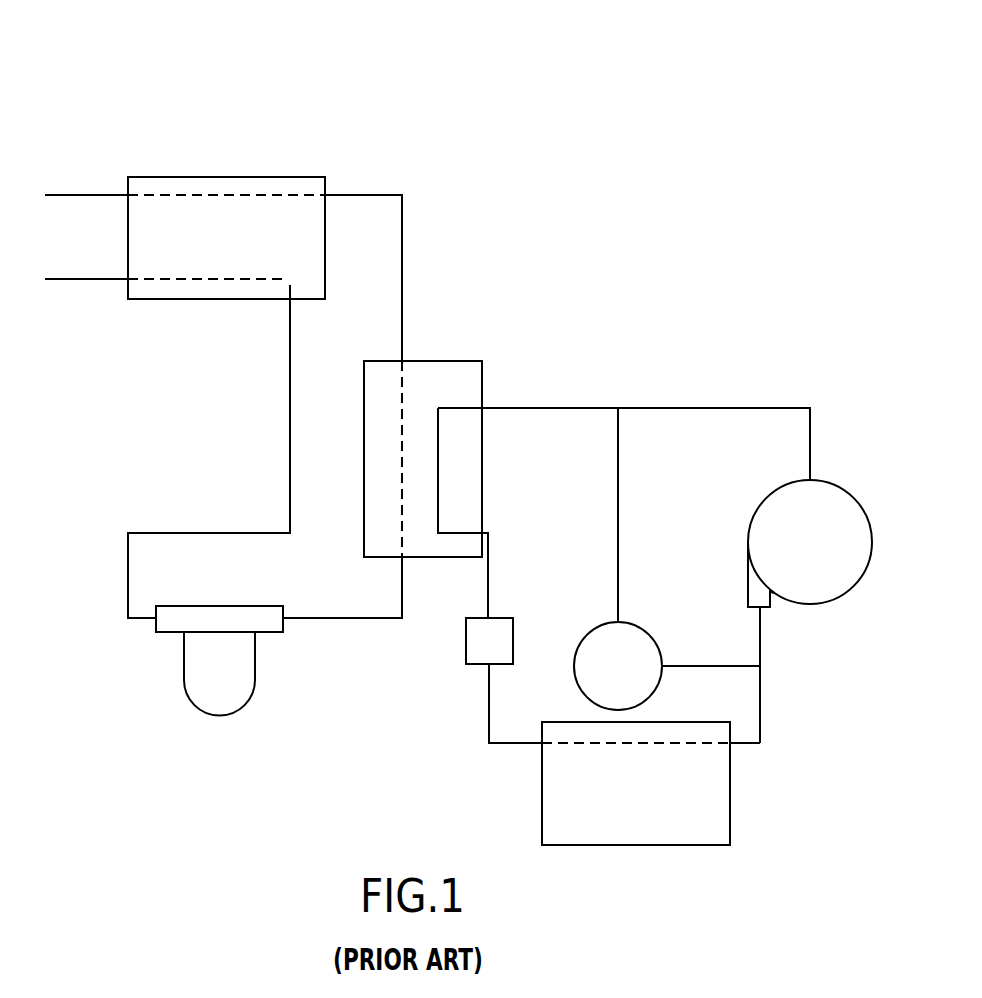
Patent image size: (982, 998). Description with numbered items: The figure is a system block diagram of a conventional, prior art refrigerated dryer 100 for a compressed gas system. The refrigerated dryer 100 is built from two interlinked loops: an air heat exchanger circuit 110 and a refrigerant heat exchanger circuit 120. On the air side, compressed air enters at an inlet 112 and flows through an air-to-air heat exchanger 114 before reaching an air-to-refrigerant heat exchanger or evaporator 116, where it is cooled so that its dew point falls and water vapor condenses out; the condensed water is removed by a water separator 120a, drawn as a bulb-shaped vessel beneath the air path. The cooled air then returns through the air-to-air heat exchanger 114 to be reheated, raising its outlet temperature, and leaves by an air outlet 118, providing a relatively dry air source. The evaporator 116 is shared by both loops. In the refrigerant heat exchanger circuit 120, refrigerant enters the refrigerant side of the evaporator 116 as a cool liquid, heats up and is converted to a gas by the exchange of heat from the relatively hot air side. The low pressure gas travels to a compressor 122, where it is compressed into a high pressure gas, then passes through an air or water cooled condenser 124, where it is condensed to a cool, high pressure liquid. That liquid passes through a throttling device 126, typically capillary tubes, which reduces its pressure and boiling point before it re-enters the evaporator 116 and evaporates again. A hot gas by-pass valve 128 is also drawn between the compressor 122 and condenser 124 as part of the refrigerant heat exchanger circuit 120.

The refrigerated dryer 100 is at (165, 80).
The air heat exchanger circuit 110 is at (135, 698).
The inlet 112 is at (63, 192).
The air-to-air heat exchanger 114 is at (300, 178).
The evaporator 116 is at (463, 361).
The air outlet 118 is at (70, 281).
The refrigerant heat exchanger circuit 120 is at (455, 802).
The water separator 120a is at (245, 702).
The compressor 122 is at (838, 597).
The condenser 124 is at (677, 845).
The throttling device 126 is at (466, 640).
The hot gas by-pass valve 128 is at (653, 632).